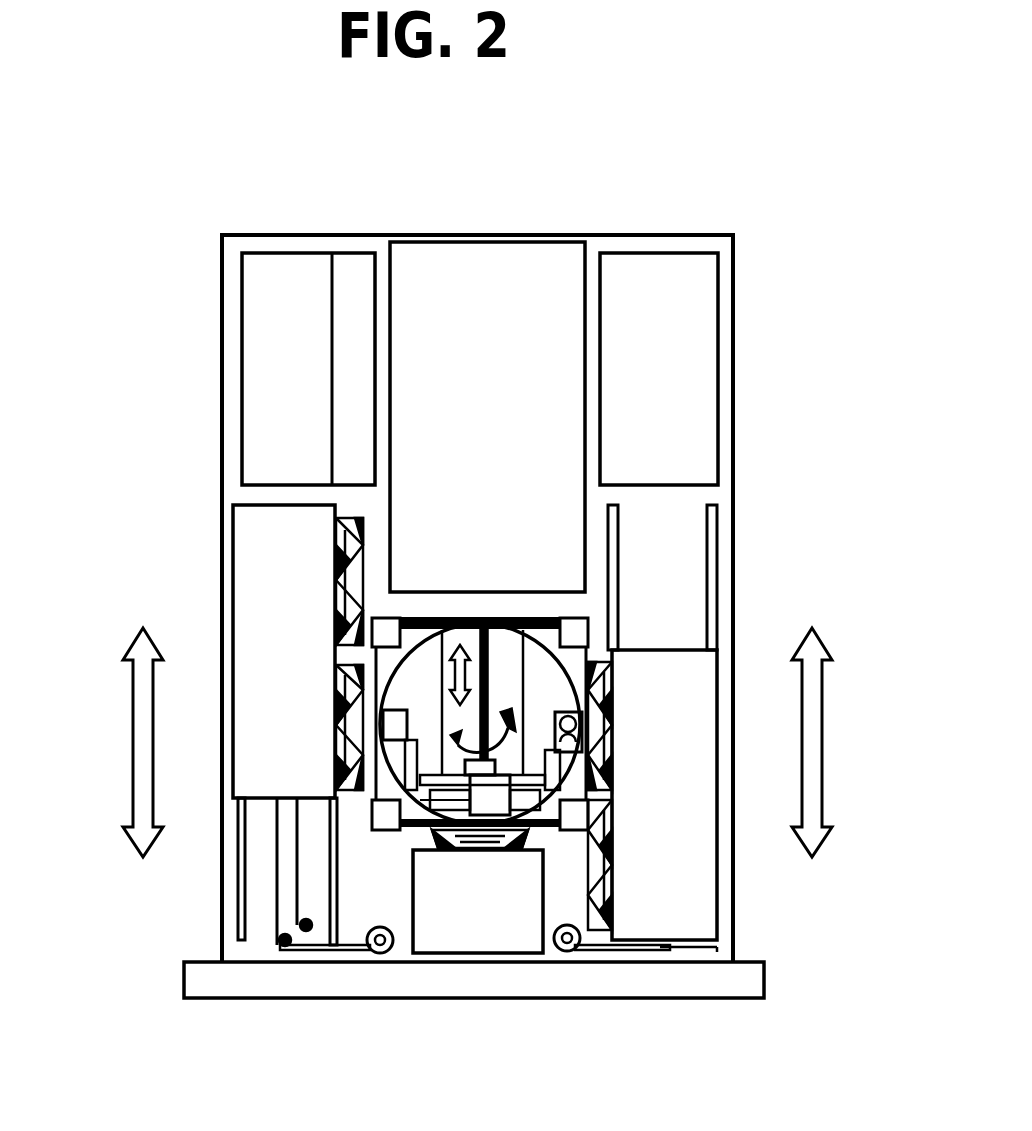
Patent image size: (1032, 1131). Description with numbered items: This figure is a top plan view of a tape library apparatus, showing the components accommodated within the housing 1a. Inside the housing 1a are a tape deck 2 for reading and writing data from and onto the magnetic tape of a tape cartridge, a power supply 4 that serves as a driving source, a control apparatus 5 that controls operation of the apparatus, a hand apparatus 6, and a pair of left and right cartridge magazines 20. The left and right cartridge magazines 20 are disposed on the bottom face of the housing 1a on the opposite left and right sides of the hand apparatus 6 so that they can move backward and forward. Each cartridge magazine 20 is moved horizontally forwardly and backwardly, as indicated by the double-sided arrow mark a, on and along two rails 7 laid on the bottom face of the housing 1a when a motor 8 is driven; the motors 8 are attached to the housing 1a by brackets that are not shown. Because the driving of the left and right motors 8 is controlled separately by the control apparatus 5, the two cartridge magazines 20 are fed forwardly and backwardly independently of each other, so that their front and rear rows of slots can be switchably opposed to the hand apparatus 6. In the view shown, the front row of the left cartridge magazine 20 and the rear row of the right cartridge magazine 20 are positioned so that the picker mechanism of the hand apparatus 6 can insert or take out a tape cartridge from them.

The housing 1a is at (638, 234).
The tape deck 2 is at (522, 253).
The power supply 4 is at (686, 379).
The control apparatus 5 is at (262, 333).
The hand apparatus 6 is at (540, 685).
The rails 7 is at (625, 545).
The motor 8 is at (375, 955).
The cartridge magazine 20 is at (260, 765).
The double-sided arrow mark a is at (133, 698).